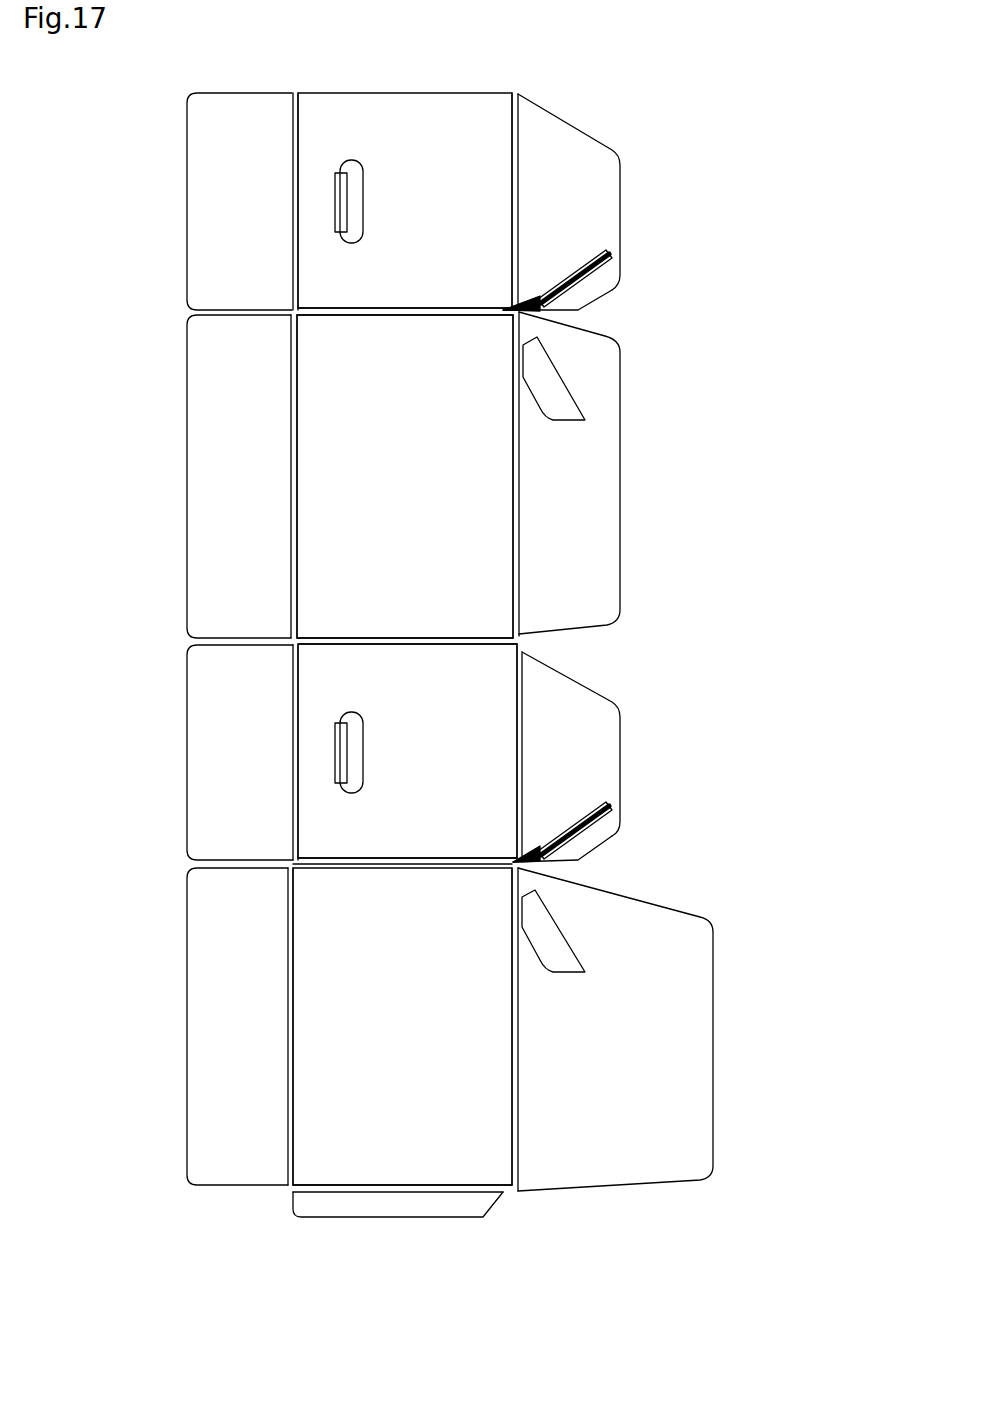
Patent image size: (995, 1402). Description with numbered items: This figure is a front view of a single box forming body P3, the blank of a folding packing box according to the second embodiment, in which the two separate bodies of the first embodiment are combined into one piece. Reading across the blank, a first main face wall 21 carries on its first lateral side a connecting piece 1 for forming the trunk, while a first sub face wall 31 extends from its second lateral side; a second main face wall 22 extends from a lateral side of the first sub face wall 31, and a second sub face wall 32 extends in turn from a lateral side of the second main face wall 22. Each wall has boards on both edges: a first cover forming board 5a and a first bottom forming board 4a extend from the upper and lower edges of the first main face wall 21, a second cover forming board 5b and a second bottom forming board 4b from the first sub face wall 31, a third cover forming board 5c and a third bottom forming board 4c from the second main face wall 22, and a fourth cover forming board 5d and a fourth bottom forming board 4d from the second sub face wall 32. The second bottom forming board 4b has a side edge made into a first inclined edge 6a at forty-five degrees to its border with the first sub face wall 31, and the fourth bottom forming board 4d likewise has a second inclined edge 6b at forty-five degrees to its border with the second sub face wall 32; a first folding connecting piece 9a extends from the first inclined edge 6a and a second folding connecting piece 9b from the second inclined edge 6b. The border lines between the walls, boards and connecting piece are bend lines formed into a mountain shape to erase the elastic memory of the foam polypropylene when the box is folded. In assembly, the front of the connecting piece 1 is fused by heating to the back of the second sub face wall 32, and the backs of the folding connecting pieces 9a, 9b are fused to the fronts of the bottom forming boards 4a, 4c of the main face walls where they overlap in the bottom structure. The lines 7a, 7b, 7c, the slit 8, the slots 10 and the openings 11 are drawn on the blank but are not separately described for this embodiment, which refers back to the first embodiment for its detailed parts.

The box forming body P3 is at (670, 76).
The connecting piece 1 is at (385, 1207).
The first main face wall 21 is at (420, 1073).
The second main face wall 22 is at (420, 511).
The first sub face wall 31 is at (450, 781).
The second sub face wall 32 is at (440, 228).
The first bottom forming board 4a is at (585, 1102).
The second bottom forming board 4b is at (580, 750).
The third bottom forming board 4c is at (580, 523).
The fourth bottom forming board 4d is at (575, 222).
The first cover forming board 5a is at (245, 1068).
The second cover forming board 5b is at (245, 826).
The third cover forming board 5c is at (243, 513).
The fourth cover forming board 5d is at (243, 216).
The first inclined edge 6a is at (562, 823).
The second inclined edge 6b is at (577, 263).
The fold line 7a is at (400, 317).
The fold line 7b is at (512, 150).
The fold line 7c is at (293, 118).
The slit 8 is at (600, 253).
The first folding connecting piece 9a is at (590, 842).
The second folding connecting piece 9b is at (598, 288).
The slot 10 is at (560, 395).
The finger hole 11 is at (341, 300).